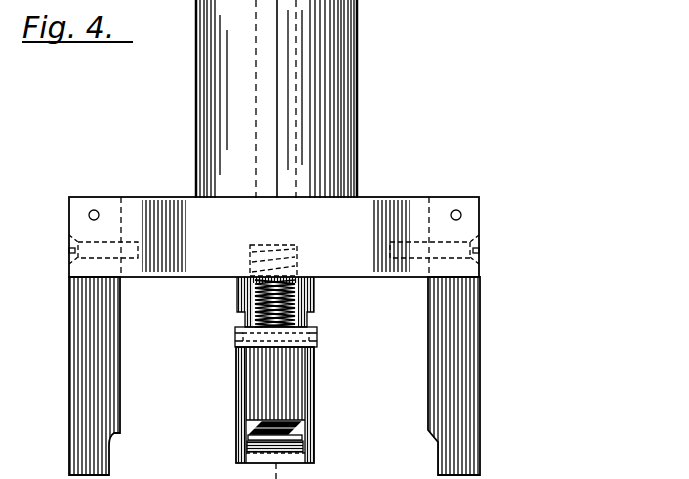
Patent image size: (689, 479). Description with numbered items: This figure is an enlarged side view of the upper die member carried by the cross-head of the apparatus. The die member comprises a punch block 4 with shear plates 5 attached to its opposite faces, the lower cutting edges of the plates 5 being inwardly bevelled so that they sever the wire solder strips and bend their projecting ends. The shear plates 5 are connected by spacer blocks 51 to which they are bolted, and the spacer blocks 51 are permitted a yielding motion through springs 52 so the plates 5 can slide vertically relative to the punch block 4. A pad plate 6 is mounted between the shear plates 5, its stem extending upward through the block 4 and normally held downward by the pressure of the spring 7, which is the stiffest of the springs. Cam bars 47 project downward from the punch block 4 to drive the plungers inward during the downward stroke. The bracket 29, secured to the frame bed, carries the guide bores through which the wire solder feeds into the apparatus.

The punch block 4 is at (468, 217).
The cam bars 47 is at (458, 285).
The springs 52 is at (300, 303).
The spacer blocks 51 is at (310, 347).
The shear plates 5 is at (308, 367).
The spring 7 is at (295, 423).
The pad plate 6 is at (244, 449).
The bracket 29 is at (394, 237).